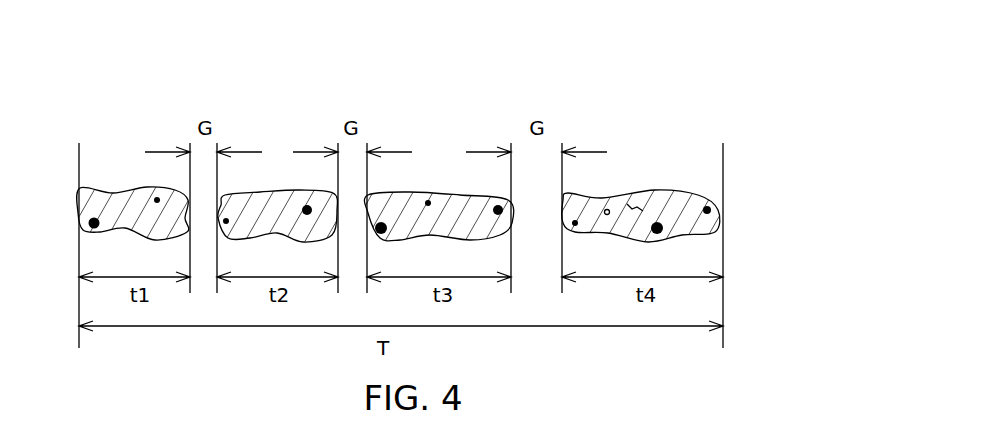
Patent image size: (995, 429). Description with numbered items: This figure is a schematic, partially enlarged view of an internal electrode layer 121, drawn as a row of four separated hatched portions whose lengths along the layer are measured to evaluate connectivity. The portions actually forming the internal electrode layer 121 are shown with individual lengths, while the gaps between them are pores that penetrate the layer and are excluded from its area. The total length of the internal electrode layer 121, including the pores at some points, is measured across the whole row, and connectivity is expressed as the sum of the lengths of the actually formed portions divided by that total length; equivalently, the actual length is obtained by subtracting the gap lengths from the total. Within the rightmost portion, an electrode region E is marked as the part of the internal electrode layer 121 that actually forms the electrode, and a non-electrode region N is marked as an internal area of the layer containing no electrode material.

The internal electrode layer 121 is at (713, 217).
The electrode region E is at (638, 210).
The non-electrode region N is at (708, 207).